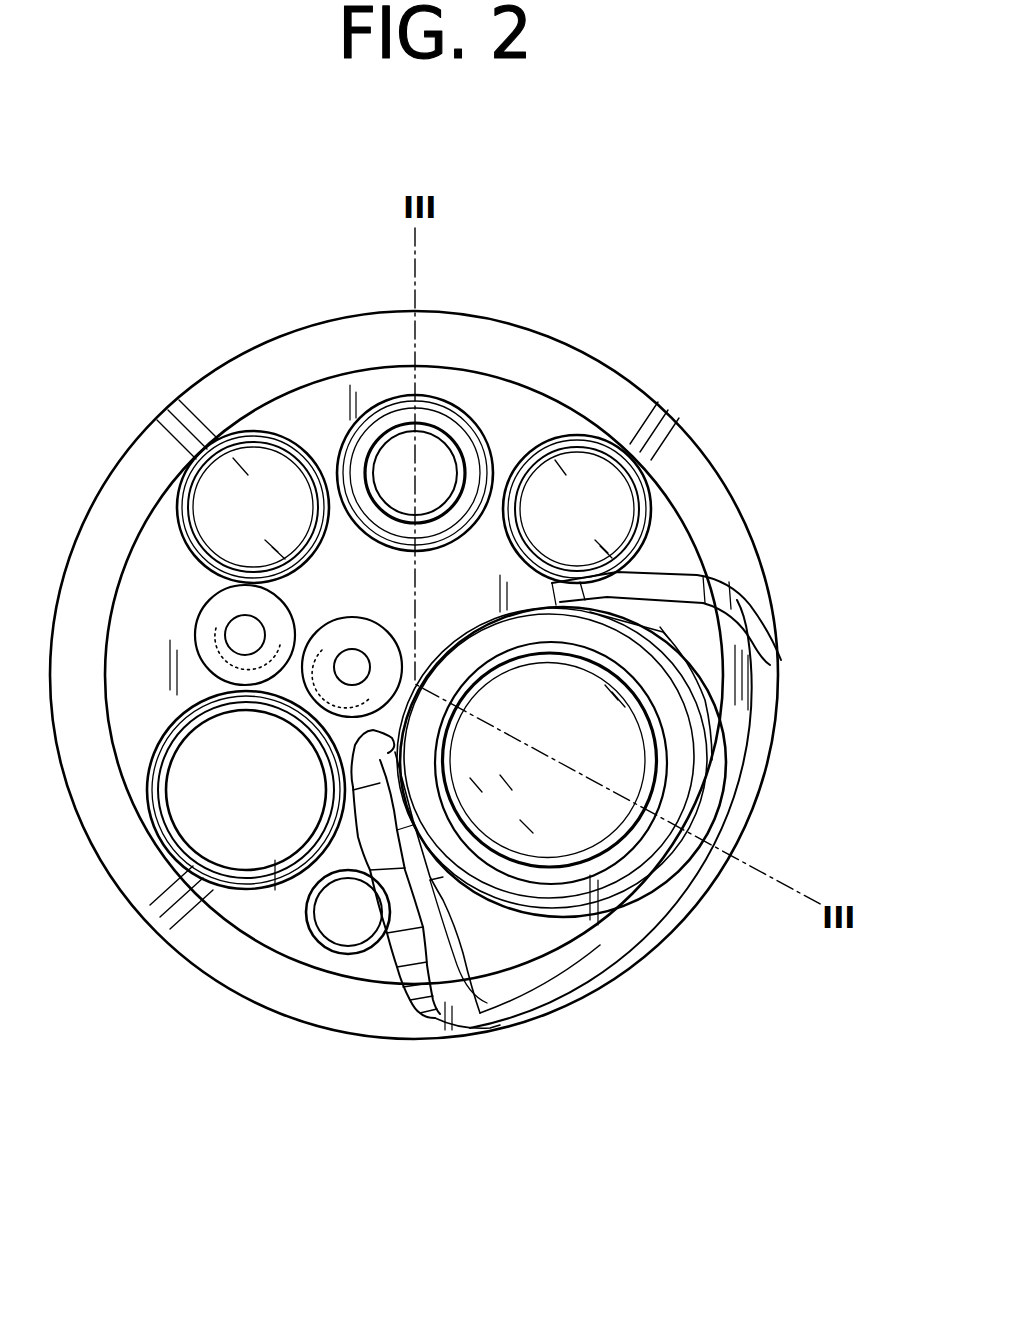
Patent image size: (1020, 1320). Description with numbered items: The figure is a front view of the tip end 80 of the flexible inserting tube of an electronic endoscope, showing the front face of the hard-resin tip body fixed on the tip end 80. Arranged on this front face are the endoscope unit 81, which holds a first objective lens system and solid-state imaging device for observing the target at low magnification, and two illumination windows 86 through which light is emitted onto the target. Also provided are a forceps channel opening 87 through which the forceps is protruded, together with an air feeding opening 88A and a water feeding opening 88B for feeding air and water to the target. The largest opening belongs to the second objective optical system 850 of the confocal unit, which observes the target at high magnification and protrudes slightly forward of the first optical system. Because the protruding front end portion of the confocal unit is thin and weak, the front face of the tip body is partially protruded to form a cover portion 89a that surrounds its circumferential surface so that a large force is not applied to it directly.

The tip end 80 is at (431, 1122).
The endoscope unit 81 is at (437, 456).
The illumination windows 86 is at (220, 518).
The forceps channel opening 87 is at (204, 828).
The air feeding opening 88A is at (243, 635).
The water feeding opening 88B is at (352, 668).
The second objective optical system 850 is at (558, 825).
The cover portion 89a is at (525, 972).